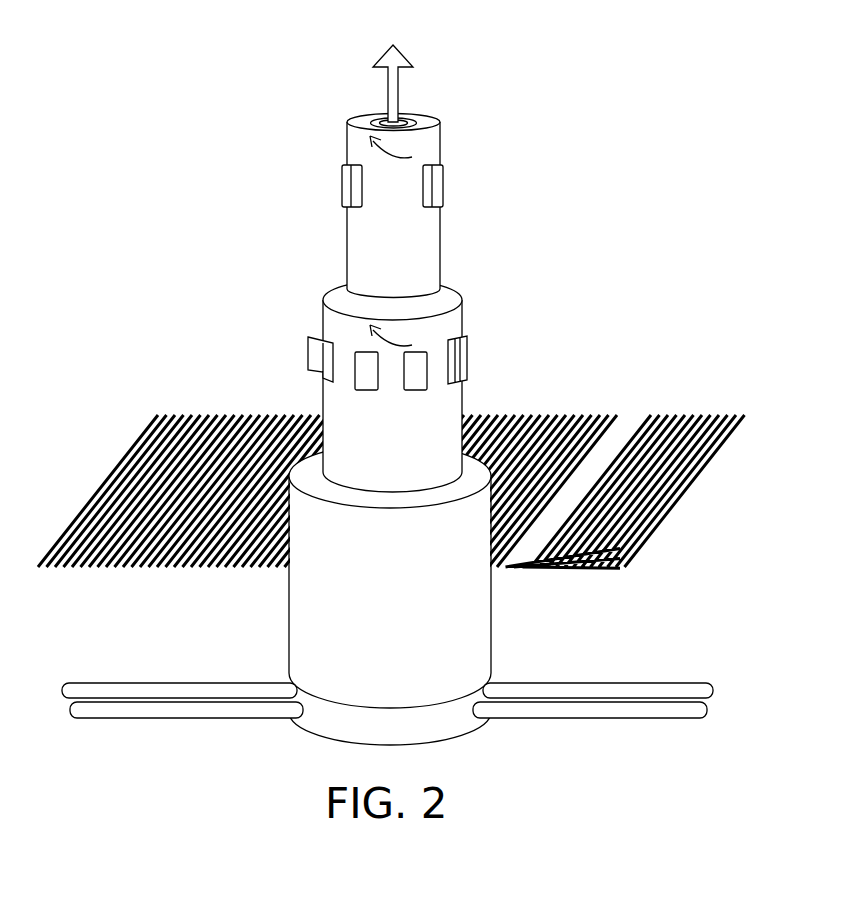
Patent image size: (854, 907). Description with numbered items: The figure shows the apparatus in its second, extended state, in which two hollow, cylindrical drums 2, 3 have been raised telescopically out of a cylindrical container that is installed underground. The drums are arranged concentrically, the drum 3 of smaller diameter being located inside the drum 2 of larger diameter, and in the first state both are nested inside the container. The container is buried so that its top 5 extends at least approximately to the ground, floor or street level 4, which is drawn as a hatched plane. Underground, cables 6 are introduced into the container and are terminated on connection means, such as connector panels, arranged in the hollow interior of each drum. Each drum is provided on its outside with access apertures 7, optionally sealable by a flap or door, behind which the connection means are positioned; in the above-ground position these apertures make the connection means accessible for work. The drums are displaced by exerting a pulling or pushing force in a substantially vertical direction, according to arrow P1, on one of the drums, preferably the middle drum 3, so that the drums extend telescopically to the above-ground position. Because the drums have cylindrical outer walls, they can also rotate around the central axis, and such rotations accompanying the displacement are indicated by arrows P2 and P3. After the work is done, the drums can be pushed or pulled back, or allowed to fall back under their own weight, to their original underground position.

The drum 2 is at (455, 408).
The drum 3 is at (428, 256).
The ground level 4 is at (643, 450).
The top of the container 5 is at (307, 467).
The cables 6 is at (210, 692).
The access apertures 7 is at (355, 183).
The arrow P1 is at (412, 77).
The arrow P2 is at (398, 339).
The arrow P3 is at (398, 153).